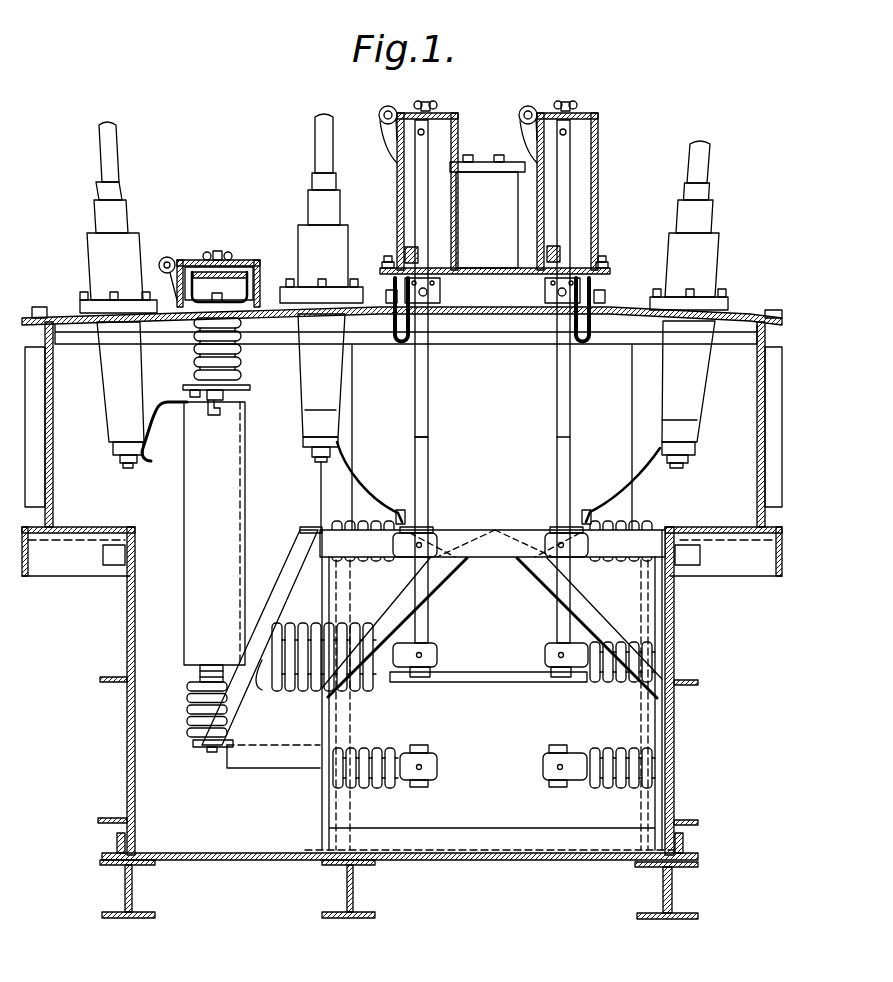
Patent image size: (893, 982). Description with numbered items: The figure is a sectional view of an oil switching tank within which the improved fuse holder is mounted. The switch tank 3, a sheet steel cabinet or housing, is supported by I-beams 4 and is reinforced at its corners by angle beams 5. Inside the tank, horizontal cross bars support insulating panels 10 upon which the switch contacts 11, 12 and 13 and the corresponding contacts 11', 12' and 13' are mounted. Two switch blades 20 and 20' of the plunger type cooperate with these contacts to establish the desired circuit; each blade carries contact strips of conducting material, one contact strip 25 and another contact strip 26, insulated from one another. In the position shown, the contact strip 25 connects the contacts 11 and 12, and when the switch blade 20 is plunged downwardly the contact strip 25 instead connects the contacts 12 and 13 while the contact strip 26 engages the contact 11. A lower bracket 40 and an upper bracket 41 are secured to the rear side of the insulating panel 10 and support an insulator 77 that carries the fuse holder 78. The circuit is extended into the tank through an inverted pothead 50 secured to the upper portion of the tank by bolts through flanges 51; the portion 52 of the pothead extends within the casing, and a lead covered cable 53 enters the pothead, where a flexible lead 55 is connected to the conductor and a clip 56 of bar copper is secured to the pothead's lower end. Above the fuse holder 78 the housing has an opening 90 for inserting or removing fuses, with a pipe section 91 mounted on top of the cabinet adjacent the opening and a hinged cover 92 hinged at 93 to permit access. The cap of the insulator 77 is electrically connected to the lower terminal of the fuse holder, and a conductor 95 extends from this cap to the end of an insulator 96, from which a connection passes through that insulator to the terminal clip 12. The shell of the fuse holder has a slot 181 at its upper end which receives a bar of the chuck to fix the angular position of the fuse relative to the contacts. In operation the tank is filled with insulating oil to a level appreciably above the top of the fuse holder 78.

The switch tank 3 is at (492, 860).
The I-beams 4 is at (123, 886).
The angle beams 5 is at (100, 538).
The insulating panels 10 is at (333, 578).
The switch contact 11 is at (436, 526).
The switch contact 11' is at (549, 526).
The switch contact 12 is at (488, 648).
The switch contact 12' is at (583, 648).
The switch contact 13 is at (401, 756).
The switch contact 13' is at (586, 756).
The switch blade 20 is at (449, 278).
The switch blade 20' is at (548, 381).
The contact strip 25 is at (425, 483).
The contact strip 26 is at (428, 346).
The lower bracket 40 is at (278, 762).
The upper bracket 41 is at (298, 562).
The pothead 50 is at (96, 255).
The flanges 51 is at (92, 303).
The inner portion of pothead 52 is at (108, 378).
The lead covered cable 53 is at (110, 151).
The flexible lead 55 is at (163, 400).
The clip 56 is at (150, 452).
The insulator 77 is at (186, 708).
The fuse holder 78 is at (248, 493).
The opening 90 is at (240, 318).
The pipe section 91 is at (258, 282).
The hinged cover 92 is at (240, 262).
The hinge 93 is at (168, 257).
The conductor 95 is at (268, 690).
The insulator 96 is at (290, 690).
The slot 181 is at (222, 406).